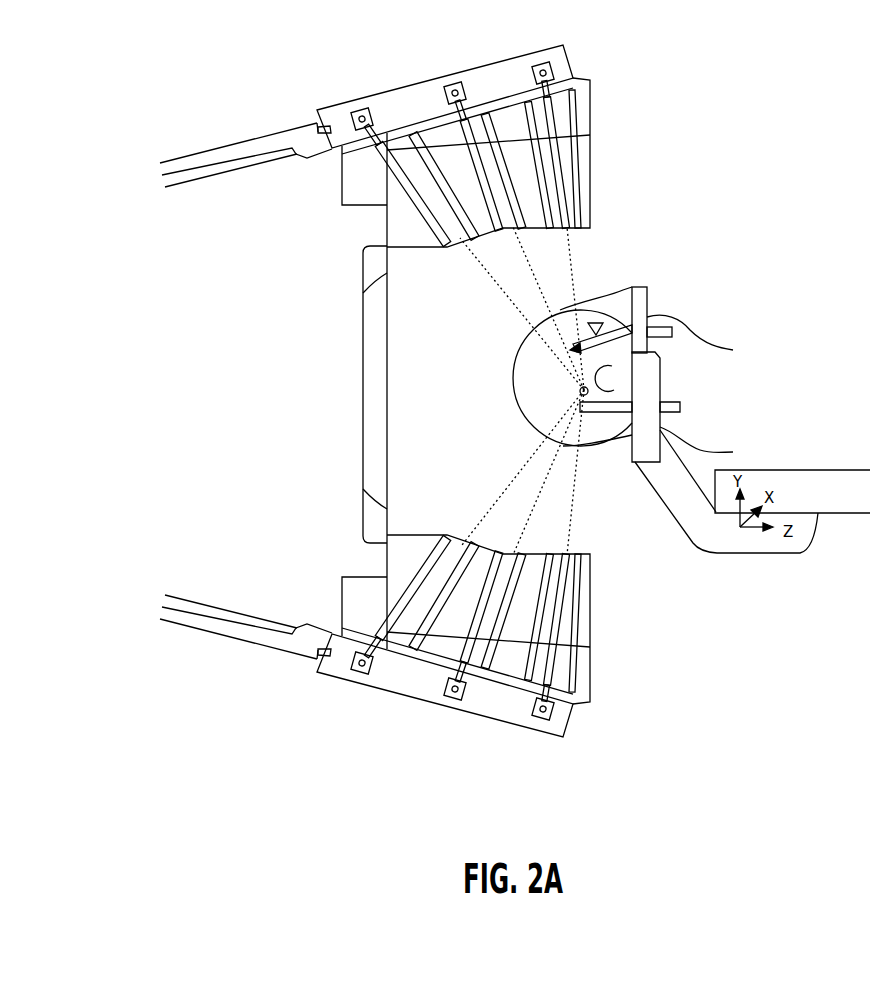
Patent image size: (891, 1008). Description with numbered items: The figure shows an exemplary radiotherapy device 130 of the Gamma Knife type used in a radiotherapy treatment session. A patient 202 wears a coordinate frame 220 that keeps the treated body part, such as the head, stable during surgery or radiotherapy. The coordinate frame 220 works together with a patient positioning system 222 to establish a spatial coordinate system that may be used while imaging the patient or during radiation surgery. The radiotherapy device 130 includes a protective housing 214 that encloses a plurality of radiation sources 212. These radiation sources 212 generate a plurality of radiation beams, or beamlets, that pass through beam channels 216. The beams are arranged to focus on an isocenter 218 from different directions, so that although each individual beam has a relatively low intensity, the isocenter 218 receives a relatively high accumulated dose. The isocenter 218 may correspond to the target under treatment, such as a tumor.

The radiotherapy device 130 is at (159, 334).
The patient 202 is at (688, 333).
The radiation sources 212 is at (560, 66).
The protective housing 214 is at (587, 118).
The beam channels 216 is at (567, 198).
The isocenter 218 is at (580, 391).
The coordinate frame 220 is at (638, 463).
The patient positioning system 222 is at (798, 474).